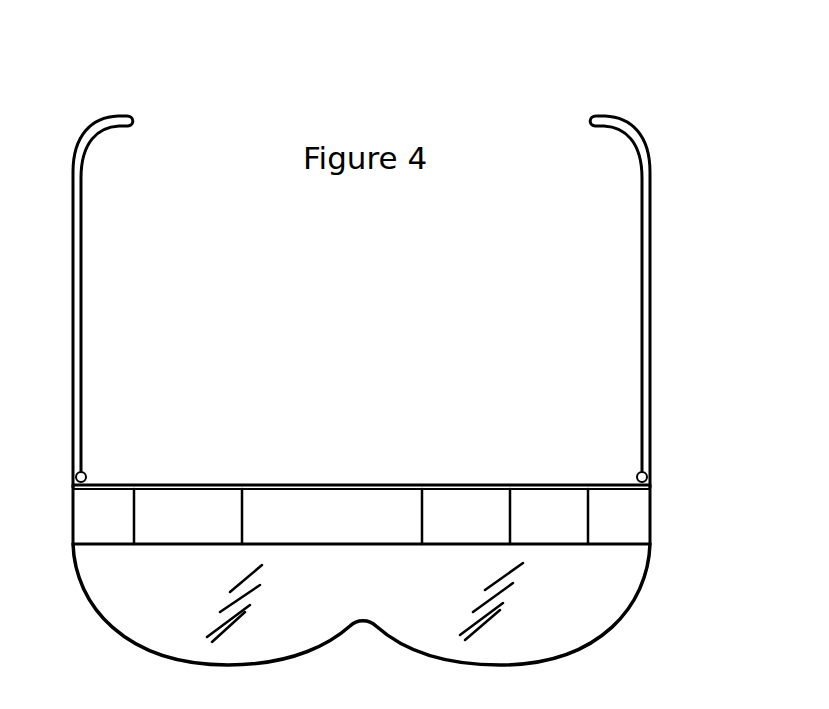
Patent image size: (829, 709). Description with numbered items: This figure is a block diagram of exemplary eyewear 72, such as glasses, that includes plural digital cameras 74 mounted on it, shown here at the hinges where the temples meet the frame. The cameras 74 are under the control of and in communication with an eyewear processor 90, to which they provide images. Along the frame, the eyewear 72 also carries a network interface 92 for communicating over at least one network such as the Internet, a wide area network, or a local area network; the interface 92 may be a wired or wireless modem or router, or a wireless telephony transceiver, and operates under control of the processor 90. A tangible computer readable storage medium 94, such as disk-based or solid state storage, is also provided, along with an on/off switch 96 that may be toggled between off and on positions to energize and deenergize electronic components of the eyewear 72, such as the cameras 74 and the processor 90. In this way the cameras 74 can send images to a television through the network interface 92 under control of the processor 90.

The eyewear 72 is at (676, 160).
The cameras 74 is at (76, 478).
The eyewear processor 90 is at (188, 498).
The network interface 92 is at (300, 498).
The tangible computer readable storage medium 94 is at (470, 498).
The on/off switch 96 is at (553, 498).